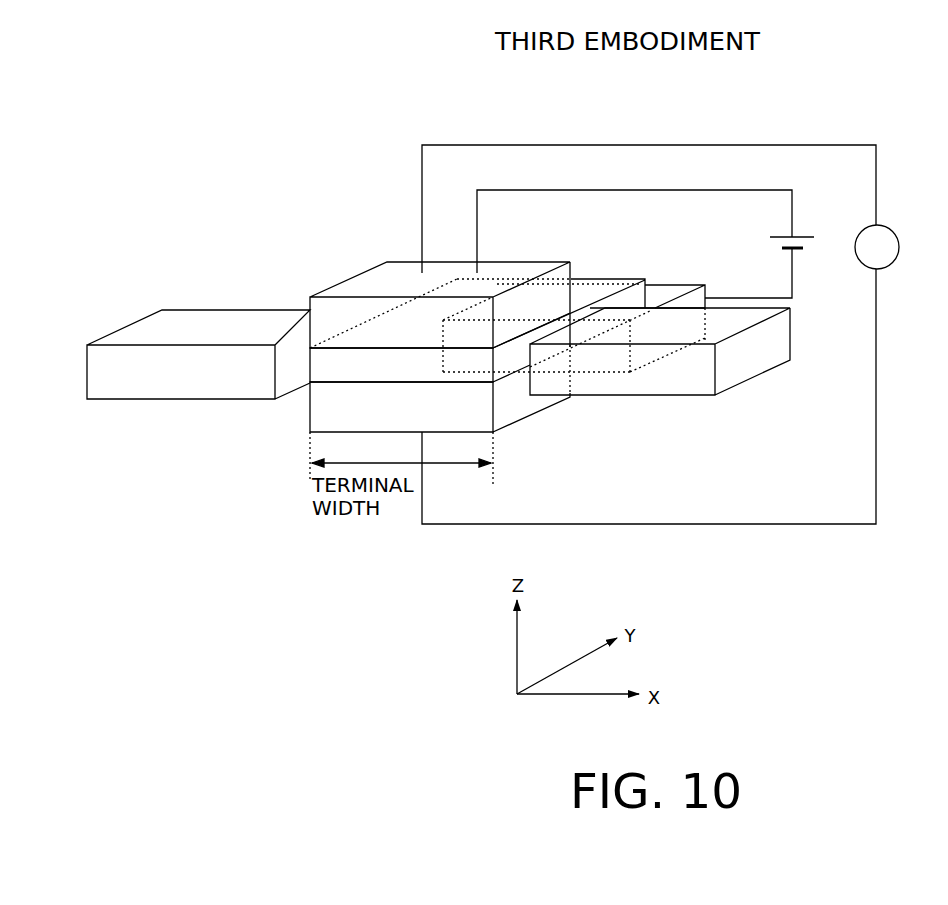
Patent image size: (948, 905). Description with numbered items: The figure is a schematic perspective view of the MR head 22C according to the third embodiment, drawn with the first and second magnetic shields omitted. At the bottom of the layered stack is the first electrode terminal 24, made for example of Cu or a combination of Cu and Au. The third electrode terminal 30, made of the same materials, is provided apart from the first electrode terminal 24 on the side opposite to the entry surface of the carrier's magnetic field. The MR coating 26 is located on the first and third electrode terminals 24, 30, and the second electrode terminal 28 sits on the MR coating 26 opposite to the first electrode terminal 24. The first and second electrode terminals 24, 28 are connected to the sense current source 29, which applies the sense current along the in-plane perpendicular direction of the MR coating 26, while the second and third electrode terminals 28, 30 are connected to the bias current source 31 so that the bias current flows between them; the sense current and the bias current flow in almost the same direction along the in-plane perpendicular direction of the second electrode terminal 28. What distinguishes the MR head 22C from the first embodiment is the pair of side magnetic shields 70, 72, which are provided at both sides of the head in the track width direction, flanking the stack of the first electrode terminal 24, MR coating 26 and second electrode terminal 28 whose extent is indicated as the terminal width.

The MR head 22C is at (484, 325).
The first electrode terminal 24 is at (531, 405).
The MR coating 26 is at (338, 375).
The second electrode terminal 28 is at (398, 268).
The third electrode terminal 30 is at (661, 289).
The side magnetic shield 70 is at (232, 308).
The side magnetic shield 72 is at (752, 370).
The bias current source 31 is at (797, 237).
The sense current source 29 is at (881, 227).